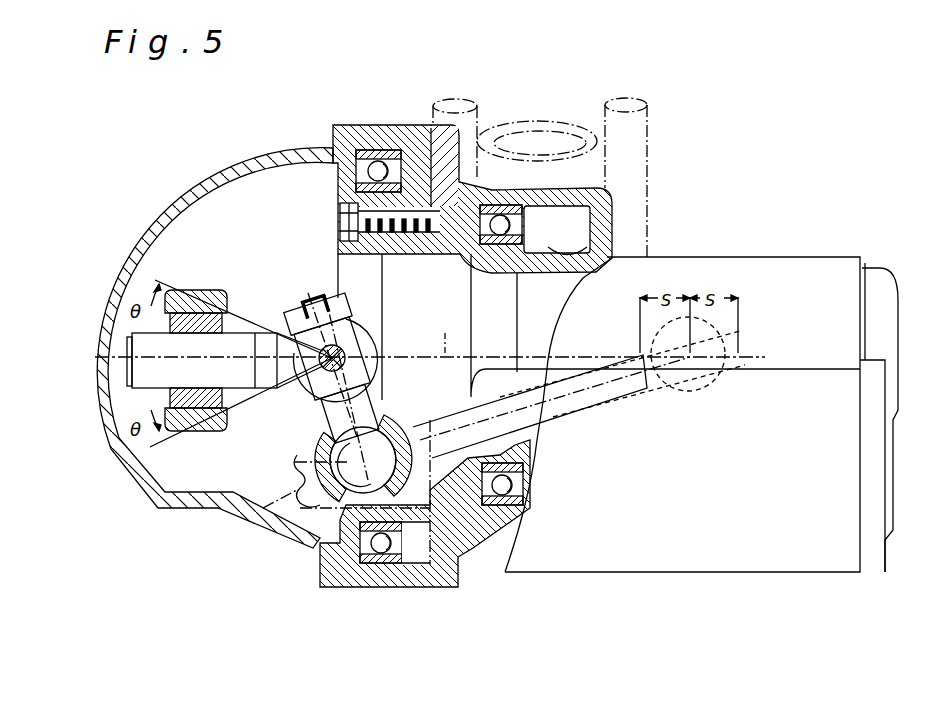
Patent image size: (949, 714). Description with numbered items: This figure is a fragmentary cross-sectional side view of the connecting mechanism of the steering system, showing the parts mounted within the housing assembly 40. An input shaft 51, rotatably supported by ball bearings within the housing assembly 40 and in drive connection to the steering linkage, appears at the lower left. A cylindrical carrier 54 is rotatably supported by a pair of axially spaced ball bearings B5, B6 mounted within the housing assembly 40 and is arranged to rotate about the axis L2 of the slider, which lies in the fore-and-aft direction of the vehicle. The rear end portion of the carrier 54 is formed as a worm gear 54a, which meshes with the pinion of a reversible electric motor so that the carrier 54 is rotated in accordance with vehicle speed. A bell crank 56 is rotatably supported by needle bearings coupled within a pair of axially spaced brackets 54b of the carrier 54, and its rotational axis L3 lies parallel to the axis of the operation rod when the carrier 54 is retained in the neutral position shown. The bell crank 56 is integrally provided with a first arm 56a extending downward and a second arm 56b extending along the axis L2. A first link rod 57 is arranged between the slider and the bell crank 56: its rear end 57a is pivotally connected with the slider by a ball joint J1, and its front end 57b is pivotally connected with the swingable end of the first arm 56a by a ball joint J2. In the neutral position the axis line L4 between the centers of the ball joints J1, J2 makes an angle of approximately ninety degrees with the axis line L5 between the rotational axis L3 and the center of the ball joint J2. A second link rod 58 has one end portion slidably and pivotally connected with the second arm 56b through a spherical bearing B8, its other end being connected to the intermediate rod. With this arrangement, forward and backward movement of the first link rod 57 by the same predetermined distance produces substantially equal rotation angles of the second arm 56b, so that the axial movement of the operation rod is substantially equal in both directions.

The housing assembly 40 is at (193, 183).
The input shaft 51 is at (288, 500).
The cylindrical carrier 54 is at (338, 182).
The worm gear 54a is at (550, 254).
The brackets 54b is at (375, 348).
The bell crank 56 is at (303, 378).
The first arm 56a is at (362, 404).
The second arm 56b is at (125, 350).
The first link rod 57 is at (530, 420).
The rear end 57a is at (648, 387).
The front end 57b is at (430, 424).
The second link rod 58 is at (216, 422).
The ball bearing B5 is at (382, 160).
The ball bearing B6 is at (500, 222).
The spherical bearing B8 is at (183, 295).
The axis of slider L2 is at (450, 332).
The rotational axis of bell crank L3 is at (353, 333).
The axis line between ball joints L4 is at (580, 392).
The axis line of first arm L5 is at (326, 416).
The ball joint J1 is at (733, 368).
The ball joint J2 is at (323, 504).